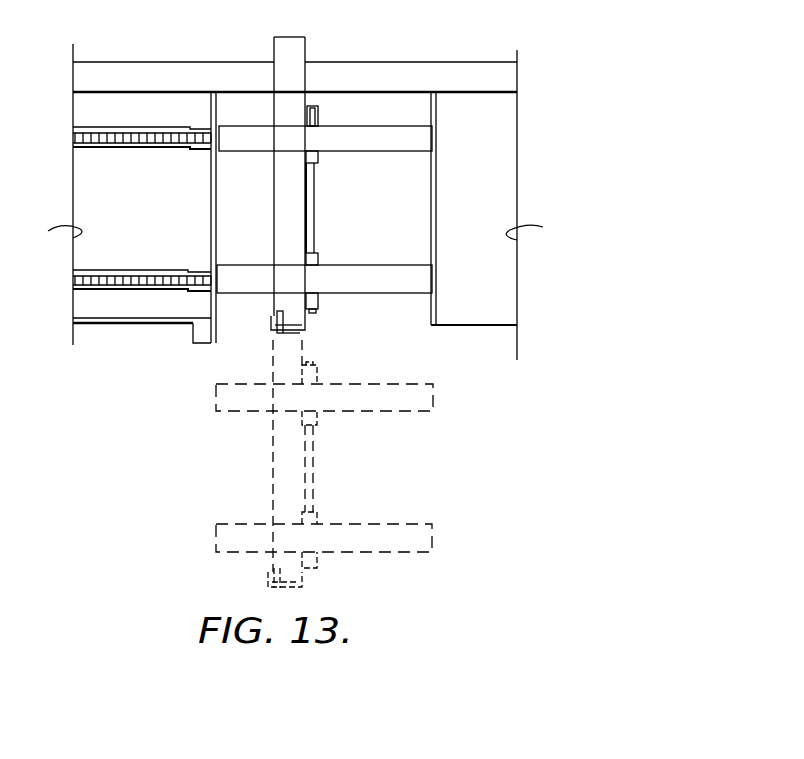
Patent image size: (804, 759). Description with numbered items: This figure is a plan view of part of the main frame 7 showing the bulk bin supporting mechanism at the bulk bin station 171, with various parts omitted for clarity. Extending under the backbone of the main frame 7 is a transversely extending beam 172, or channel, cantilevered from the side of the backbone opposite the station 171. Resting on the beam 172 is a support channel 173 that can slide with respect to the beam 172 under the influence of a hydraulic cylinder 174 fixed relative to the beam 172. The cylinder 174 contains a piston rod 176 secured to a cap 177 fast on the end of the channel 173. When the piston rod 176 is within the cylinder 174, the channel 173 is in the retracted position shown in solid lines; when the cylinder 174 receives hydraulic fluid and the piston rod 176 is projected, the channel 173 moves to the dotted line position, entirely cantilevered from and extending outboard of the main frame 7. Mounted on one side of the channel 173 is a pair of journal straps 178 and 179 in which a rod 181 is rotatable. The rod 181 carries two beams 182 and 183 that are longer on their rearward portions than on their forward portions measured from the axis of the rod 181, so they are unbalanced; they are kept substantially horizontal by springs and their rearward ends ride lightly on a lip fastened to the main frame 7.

The main frame 7 is at (148, 62).
The bulk bin station 171 is at (214, 336).
The beam 172 is at (305, 57).
The support channel 173 is at (274, 183).
The hydraulic cylinder 174 is at (242, 230).
The piston rod 176 is at (290, 327).
The cap 177 is at (292, 332).
The journal strap 178 is at (318, 259).
The journal strap 179 is at (318, 156).
The rod 181 is at (313, 200).
The beam 182 is at (395, 143).
The beam 183 is at (377, 272).